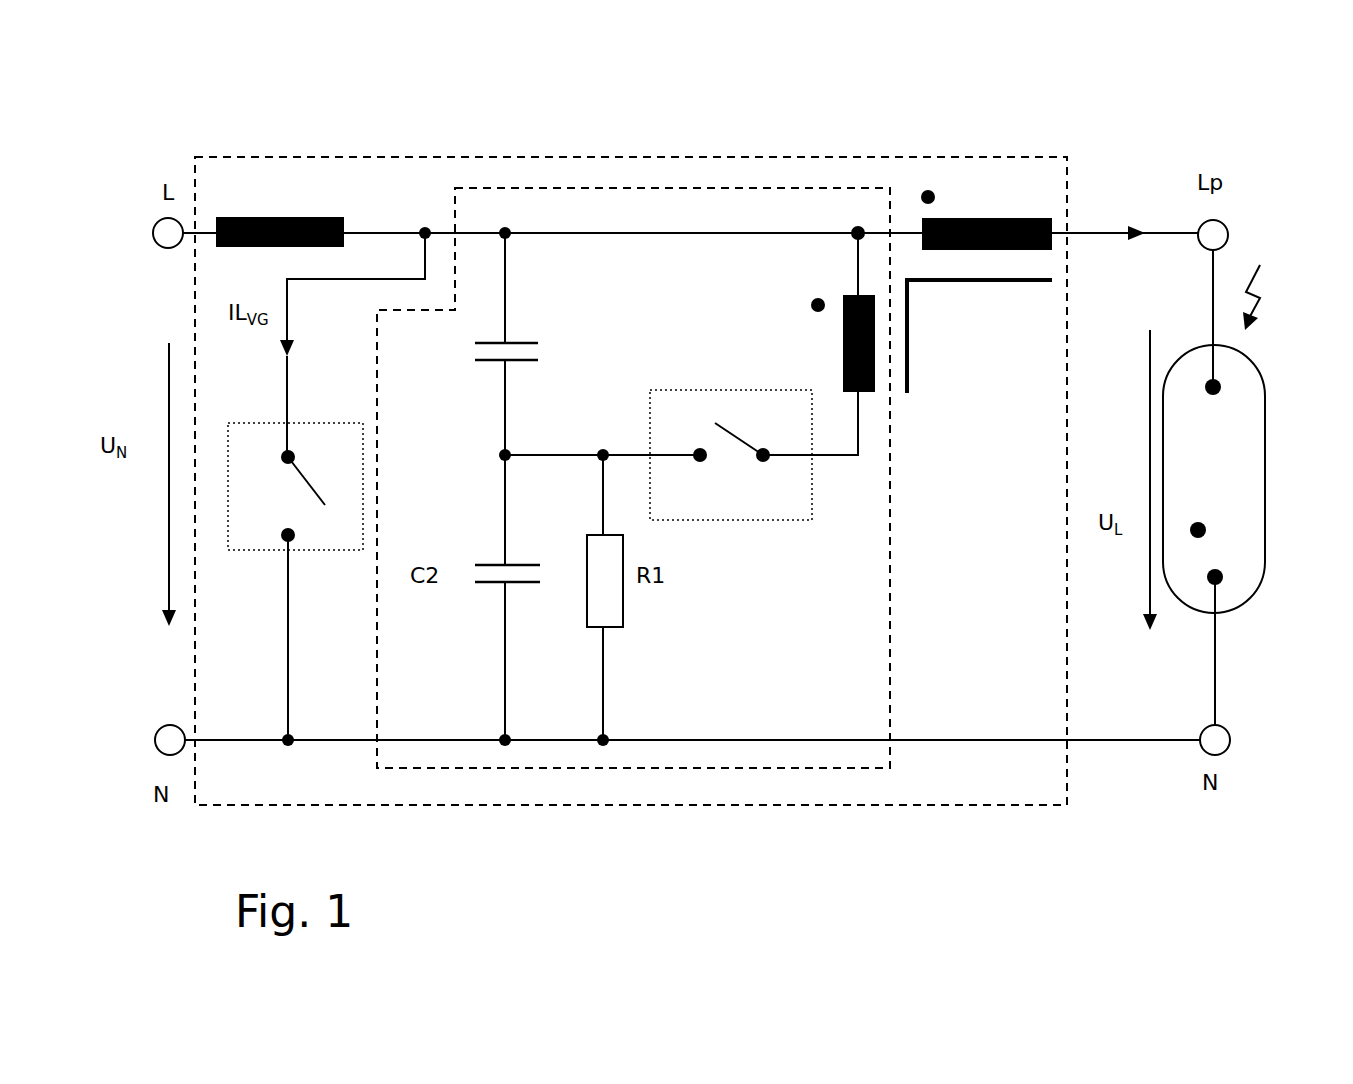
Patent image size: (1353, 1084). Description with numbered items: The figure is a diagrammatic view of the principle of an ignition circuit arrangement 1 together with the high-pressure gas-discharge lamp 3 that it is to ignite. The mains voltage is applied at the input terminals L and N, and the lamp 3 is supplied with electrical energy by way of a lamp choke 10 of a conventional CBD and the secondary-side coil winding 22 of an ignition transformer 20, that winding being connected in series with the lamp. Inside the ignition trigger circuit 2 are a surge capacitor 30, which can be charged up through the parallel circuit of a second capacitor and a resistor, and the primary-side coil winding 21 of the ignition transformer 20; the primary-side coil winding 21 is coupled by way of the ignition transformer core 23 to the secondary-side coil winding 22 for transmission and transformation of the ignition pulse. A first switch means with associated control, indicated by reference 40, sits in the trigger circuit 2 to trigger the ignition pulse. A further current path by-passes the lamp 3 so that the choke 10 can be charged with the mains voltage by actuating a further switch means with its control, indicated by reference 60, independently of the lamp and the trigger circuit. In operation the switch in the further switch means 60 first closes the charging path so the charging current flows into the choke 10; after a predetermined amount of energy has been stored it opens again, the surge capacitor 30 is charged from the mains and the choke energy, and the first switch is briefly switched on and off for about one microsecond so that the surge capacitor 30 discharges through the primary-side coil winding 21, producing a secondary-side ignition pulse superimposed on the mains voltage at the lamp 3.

The ignition circuit arrangement 1 is at (905, 157).
The ignition trigger circuit 2 is at (632, 188).
The high-pressure gas-discharge lamp 3 is at (1265, 453).
The lamp choke 10 is at (302, 202).
The ignition transformer 20 is at (866, 203).
The primary-side coil winding 21 is at (843, 328).
The secondary-side coil winding 22 is at (1053, 218).
The ignition transformer core 23 is at (940, 283).
The surge capacitor 30 is at (528, 343).
The first switch means with associated control 40 is at (732, 521).
The further switch means with control 60 is at (305, 562).